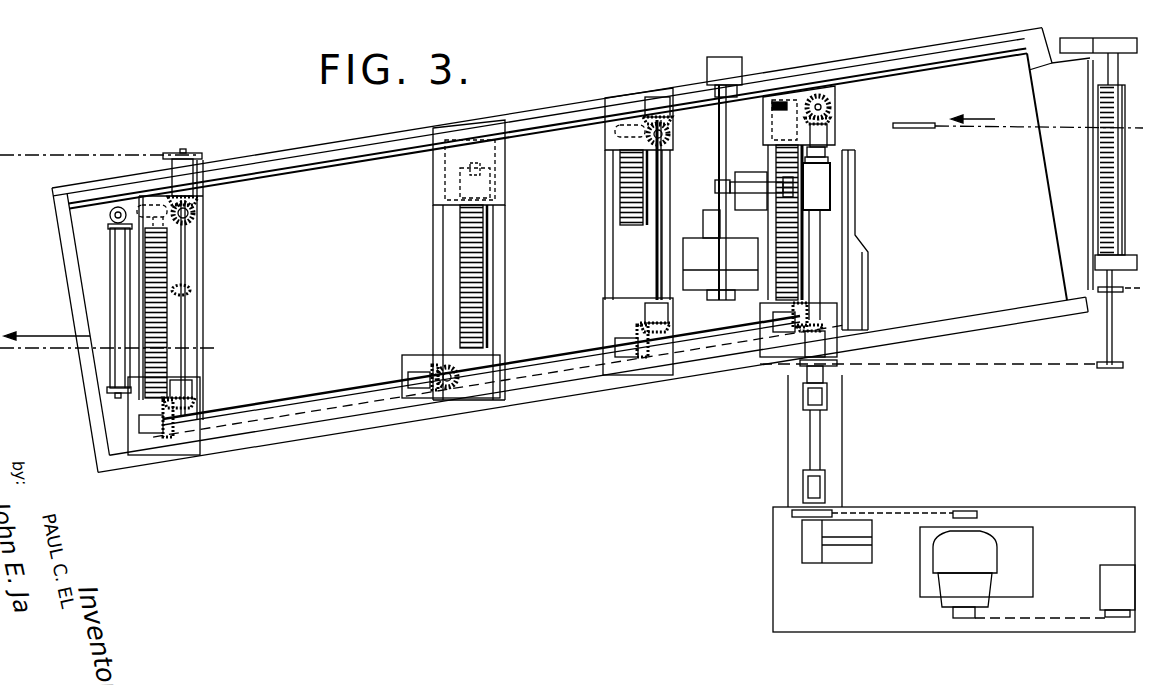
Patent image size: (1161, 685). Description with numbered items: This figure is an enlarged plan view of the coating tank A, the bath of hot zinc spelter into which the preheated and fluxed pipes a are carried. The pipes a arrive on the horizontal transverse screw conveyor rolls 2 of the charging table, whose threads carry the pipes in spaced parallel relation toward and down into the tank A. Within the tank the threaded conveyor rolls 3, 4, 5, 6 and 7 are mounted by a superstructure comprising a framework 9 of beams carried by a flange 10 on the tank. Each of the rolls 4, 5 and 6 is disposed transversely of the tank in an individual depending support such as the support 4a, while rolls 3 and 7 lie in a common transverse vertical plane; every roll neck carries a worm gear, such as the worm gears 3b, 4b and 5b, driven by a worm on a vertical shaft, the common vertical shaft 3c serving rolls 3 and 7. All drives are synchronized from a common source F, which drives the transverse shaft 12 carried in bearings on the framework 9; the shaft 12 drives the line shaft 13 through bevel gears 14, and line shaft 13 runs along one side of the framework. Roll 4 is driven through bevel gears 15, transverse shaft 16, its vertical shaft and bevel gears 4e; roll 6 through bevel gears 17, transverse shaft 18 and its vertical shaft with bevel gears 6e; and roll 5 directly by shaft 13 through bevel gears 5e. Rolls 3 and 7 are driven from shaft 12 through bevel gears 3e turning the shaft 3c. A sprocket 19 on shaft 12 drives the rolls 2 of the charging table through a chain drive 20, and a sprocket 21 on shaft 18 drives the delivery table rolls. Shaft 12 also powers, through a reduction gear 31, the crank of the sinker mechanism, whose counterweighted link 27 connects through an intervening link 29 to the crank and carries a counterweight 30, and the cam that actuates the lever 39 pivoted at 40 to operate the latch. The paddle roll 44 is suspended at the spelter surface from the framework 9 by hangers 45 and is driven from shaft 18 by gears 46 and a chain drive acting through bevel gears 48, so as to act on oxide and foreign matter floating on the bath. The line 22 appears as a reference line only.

The screw conveyor roll 2 is at (1100, 160).
The conveyor roll 3 is at (775, 170).
The worm gear 3b is at (790, 100).
The vertical drive shaft 3c is at (822, 96).
The bevel gears 3e is at (838, 105).
The conveyor roll 4 is at (620, 190).
The depending support 4a is at (628, 215).
The worm gear 4b is at (632, 130).
The bevel gears 4e is at (662, 120).
The conveyor roll 5 is at (490, 288).
The worm gear 5b is at (485, 390).
The bevel gears 5e is at (448, 393).
The conveyor roll 6 is at (167, 257).
The bevel gears 6e is at (200, 203).
The conveyor roll 7 is at (850, 270).
The framework 9 is at (333, 152).
The flange 10 is at (554, 125).
The transverse shaft 12 is at (866, 256).
The line shaft 13 is at (333, 408).
The bevel gears 14 is at (795, 328).
The bevel gears 15 is at (648, 360).
The transverse shaft 16 is at (683, 262).
The bevel gears 17 is at (195, 405).
The transverse shaft 18 is at (186, 275).
The sprocket 19 is at (825, 368).
The chain drive 20 is at (1022, 368).
The sprocket 21 is at (190, 153).
The axis line 22 is at (31, 153).
The counterweighted link 27 is at (724, 135).
The intervening link 29 is at (716, 185).
The counterweight 30 is at (730, 62).
The reduction gear 31 is at (830, 185).
The lever 39 is at (858, 230).
The pivot 40 is at (868, 320).
The paddle roll 44 is at (112, 298).
The hangers 45 is at (108, 226).
The gears 46 is at (190, 292).
The bevel gears 48 is at (122, 210).
The tank A is at (358, 254).
The common source F is at (954, 569).
The pipes a is at (936, 114).